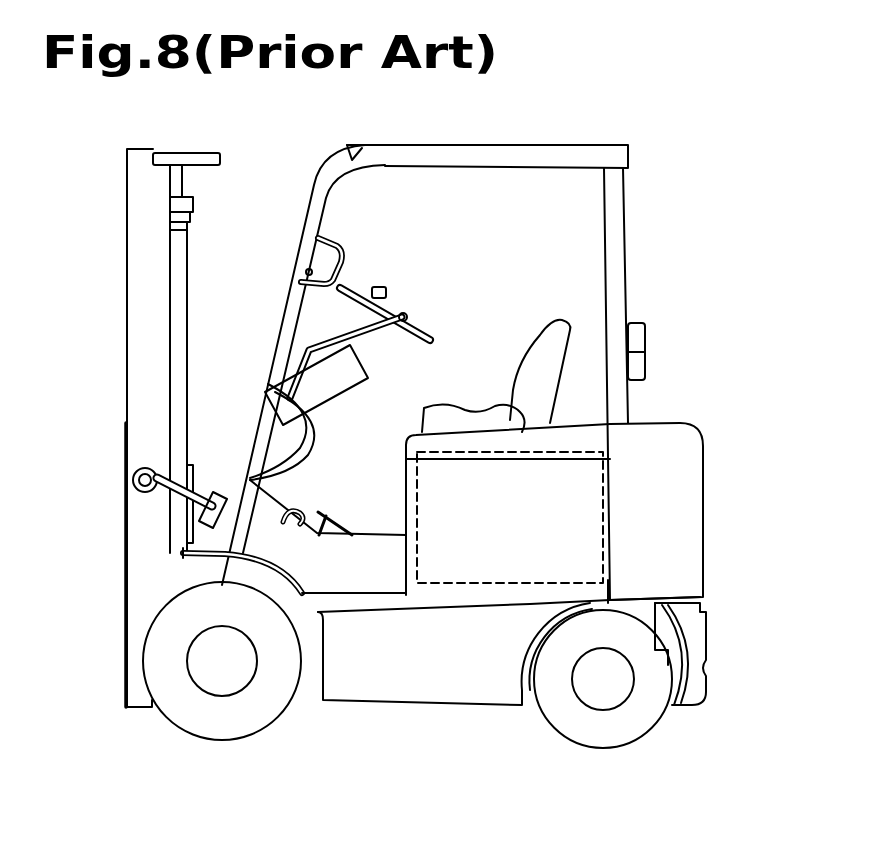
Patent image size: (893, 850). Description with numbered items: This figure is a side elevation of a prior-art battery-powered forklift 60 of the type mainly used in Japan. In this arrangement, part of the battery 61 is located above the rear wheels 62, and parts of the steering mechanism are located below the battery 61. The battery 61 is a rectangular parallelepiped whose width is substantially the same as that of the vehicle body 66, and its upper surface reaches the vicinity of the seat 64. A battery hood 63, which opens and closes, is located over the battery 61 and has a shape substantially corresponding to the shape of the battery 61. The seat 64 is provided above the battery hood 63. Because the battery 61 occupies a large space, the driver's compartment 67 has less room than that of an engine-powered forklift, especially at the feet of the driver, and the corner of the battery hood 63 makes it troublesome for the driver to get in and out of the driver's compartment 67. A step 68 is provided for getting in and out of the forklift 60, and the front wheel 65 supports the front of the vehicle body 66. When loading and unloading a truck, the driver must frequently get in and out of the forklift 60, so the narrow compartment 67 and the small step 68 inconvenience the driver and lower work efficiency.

The forklift 60 is at (656, 262).
The battery 61 is at (607, 513).
The rear wheels 62 is at (548, 675).
The battery hood 63 is at (573, 435).
The seat 64 is at (525, 360).
The front wheel 65 is at (160, 622).
The vehicle body 66 is at (443, 695).
The driver's compartment 67 is at (368, 456).
The step 68 is at (377, 587).